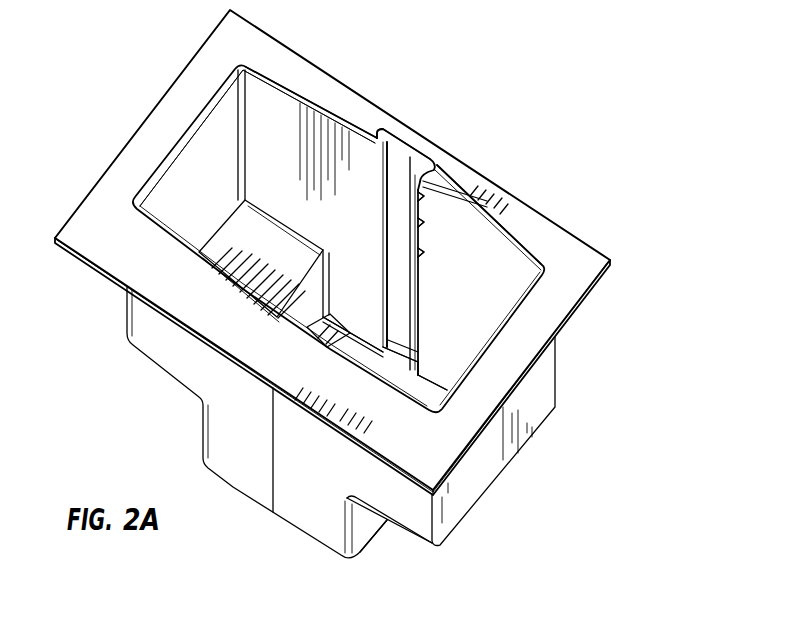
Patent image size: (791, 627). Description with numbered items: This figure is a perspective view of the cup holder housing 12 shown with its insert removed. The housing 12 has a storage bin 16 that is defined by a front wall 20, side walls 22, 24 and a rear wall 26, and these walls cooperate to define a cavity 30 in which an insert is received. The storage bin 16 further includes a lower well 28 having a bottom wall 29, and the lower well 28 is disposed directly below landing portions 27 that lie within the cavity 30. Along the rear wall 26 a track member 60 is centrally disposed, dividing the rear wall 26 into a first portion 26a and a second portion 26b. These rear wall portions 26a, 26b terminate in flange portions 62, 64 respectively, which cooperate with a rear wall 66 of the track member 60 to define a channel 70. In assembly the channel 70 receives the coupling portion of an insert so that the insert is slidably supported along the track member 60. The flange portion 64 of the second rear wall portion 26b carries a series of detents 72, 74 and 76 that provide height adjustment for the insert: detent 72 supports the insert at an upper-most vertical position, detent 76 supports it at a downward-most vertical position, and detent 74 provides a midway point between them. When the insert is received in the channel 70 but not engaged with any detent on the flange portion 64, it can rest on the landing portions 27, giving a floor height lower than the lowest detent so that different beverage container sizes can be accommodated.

The housing 12 is at (556, 137).
The storage bin 16 is at (558, 350).
The front wall 20 is at (252, 468).
The side wall 22 is at (477, 485).
The side wall 24 is at (180, 178).
The rear wall 26 is at (305, 127).
The first rear wall portion 26a is at (367, 237).
The second rear wall portion 26b is at (517, 287).
The landing portions 27 is at (262, 287).
The lower well 28 is at (370, 532).
The bottom wall 29 is at (372, 359).
The cavity 30 is at (265, 105).
The track member 60 is at (417, 135).
The flange portion 62 is at (372, 163).
The flange portion 64 is at (417, 323).
The rear wall of track member 66 is at (414, 287).
The channel 70 is at (400, 156).
The detent 72 is at (421, 194).
The detent 74 is at (421, 222).
The detent 76 is at (421, 252).